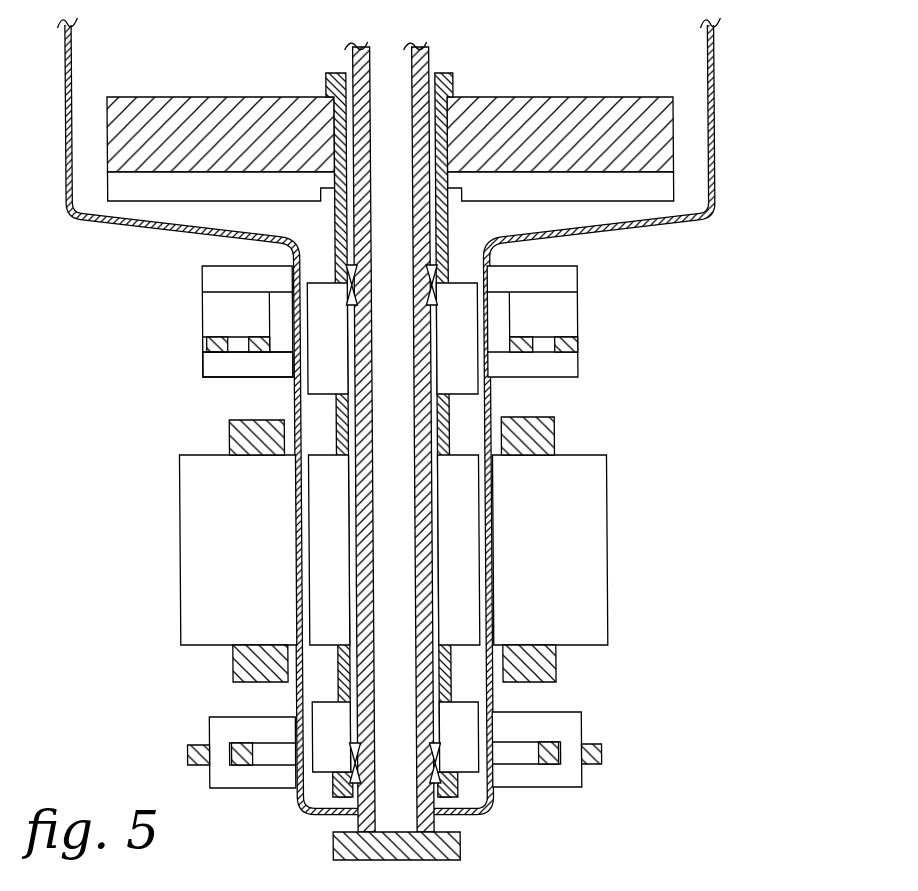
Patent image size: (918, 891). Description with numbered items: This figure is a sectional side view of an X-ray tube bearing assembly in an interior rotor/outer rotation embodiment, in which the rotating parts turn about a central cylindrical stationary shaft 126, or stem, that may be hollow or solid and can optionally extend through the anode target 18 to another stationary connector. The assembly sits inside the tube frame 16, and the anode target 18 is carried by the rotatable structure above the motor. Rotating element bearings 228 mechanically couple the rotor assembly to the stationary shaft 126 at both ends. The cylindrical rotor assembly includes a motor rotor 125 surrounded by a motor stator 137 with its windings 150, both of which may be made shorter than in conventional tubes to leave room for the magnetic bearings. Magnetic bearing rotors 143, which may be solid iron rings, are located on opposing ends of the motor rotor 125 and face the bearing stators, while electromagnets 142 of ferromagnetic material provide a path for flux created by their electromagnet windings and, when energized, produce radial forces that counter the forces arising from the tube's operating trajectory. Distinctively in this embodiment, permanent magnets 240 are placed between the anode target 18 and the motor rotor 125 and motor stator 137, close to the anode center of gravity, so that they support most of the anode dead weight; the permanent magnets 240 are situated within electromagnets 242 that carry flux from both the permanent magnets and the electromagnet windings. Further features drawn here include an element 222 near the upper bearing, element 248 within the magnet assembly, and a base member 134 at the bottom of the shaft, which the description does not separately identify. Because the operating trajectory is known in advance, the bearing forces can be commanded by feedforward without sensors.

The frame 16 is at (716, 212).
The anode target 18 is at (588, 97).
The shaft sleeve 222 is at (445, 265).
The rotating element bearings 228 is at (345, 266).
The permanent magnet 240 is at (220, 308).
The magnet pole pieces 248 is at (205, 341).
The electromagnets 242 is at (240, 365).
The motor stator 137 is at (590, 535).
The cylindrical stationary shaft 126 is at (368, 565).
The motor rotor 125 is at (462, 568).
The windings 150 is at (558, 657).
The magnetic bearing rotors 143 is at (465, 718).
The electromagnets 142 is at (230, 730).
The base plate 134 is at (333, 845).